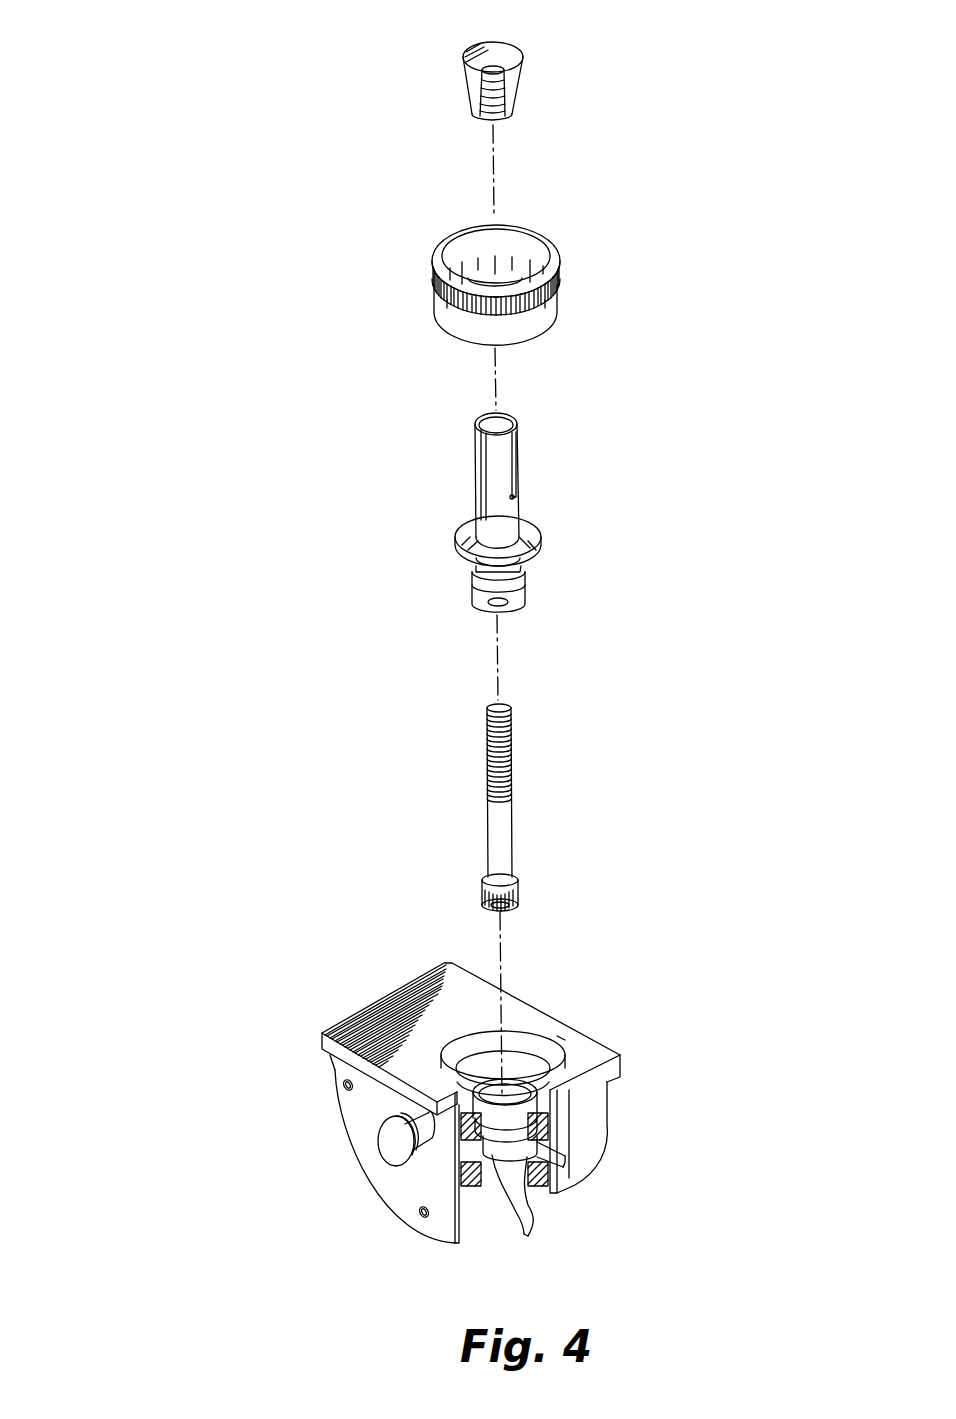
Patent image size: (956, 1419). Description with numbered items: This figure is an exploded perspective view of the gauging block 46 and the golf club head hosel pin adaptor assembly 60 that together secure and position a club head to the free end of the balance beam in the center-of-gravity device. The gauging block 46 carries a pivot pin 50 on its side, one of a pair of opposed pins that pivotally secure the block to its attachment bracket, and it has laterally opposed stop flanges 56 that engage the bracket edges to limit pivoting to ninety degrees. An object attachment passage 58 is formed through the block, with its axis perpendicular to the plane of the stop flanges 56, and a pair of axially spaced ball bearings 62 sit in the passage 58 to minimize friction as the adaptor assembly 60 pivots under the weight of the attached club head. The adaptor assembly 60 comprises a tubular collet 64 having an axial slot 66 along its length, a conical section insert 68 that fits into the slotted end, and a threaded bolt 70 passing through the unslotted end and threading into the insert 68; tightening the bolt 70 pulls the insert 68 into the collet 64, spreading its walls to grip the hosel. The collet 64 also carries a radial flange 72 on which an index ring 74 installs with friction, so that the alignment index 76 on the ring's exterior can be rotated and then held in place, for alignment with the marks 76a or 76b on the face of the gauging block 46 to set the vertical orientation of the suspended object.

The gauging block 46 is at (192, 1147).
The pivot pins 50 is at (386, 1145).
The stop flanges 56 is at (330, 1062).
The object attachment passage 58 is at (517, 1038).
The golf club head hosel pin adaptor assembly 60 is at (575, 792).
The ball bearings 62 is at (524, 1237).
The collet 64 is at (475, 480).
The axial slot 66 is at (514, 463).
The conical section insert 68 is at (518, 53).
The threaded bolt 70 is at (488, 783).
The radial flange 72 is at (458, 535).
The index ring 74 is at (562, 296).
The alignment index 76 is at (437, 296).
The mark 76a is at (425, 1018).
The mark 76b is at (556, 1030).